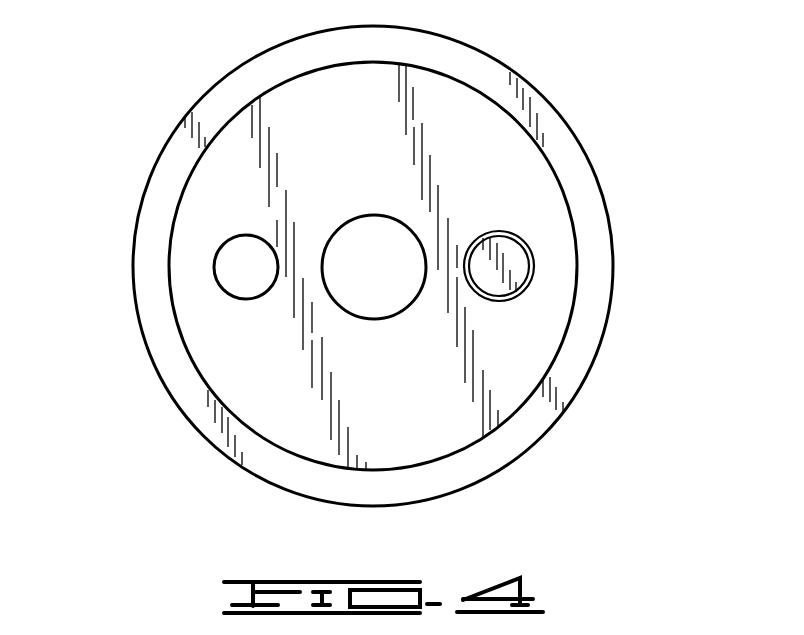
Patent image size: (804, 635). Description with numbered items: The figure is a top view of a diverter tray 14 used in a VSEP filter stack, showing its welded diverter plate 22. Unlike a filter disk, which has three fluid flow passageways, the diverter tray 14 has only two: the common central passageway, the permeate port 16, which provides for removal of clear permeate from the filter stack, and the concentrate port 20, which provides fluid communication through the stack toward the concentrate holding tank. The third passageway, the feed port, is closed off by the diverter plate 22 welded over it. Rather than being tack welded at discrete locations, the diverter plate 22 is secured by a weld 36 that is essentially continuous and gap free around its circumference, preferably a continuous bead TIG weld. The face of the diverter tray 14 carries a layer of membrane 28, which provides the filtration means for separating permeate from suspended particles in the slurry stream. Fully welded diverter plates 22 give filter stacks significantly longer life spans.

The diverter tray 14 is at (480, 50).
The permeate port 16 is at (373, 215).
The concentrate port 20 is at (213, 275).
The diverter plate 22 is at (518, 267).
The membrane 28 is at (225, 372).
The weld 36 is at (517, 232).